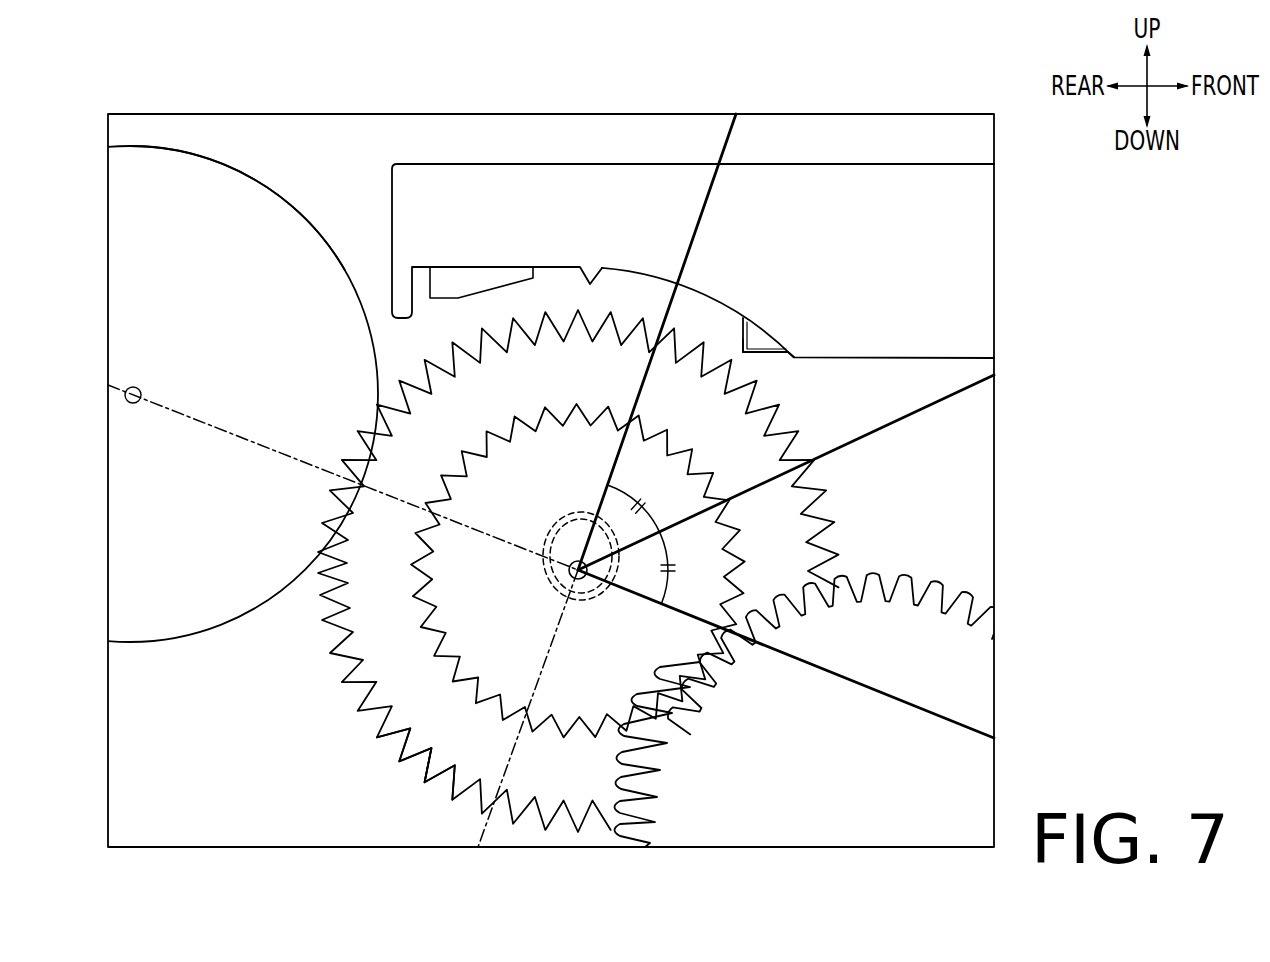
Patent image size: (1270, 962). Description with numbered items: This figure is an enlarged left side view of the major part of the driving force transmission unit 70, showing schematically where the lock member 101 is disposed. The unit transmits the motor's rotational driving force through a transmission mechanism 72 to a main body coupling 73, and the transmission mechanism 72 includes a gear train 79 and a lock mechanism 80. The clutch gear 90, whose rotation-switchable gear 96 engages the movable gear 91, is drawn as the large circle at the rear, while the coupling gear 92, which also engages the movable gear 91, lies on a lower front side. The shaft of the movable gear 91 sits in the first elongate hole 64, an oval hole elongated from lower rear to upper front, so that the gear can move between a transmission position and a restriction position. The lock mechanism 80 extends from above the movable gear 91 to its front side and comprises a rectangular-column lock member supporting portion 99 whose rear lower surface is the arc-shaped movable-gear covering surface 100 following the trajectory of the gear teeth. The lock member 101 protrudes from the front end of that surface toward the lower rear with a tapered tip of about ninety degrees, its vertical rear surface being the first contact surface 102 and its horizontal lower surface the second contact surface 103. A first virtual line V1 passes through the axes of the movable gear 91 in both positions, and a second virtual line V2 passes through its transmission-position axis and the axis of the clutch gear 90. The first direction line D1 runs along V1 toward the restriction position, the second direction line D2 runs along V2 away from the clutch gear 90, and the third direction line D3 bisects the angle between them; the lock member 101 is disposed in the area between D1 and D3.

The first elongate hole 64 is at (556, 580).
The driving force transmission unit 70 is at (325, 657).
The transmission mechanism 72 is at (370, 739).
The main body coupling 73 is at (909, 833).
The gear train 79 is at (385, 765).
The lock mechanism 80 is at (942, 158).
The clutch gear 90 is at (211, 160).
The movable gear 91 is at (437, 783).
The coupling gear 92 is at (943, 588).
The rotation-switchable gear 96 is at (280, 197).
The lock member supporting portion 99 is at (855, 164).
The movable-gear covering surface 100 is at (590, 284).
The lock member 101 is at (753, 360).
The first contact surface 102 is at (743, 330).
The second contact surface 103 is at (770, 353).
The first direction line D1 is at (711, 190).
The second direction line D2 is at (893, 697).
The third direction line D3 is at (930, 404).
The first virtual line V1 is at (510, 757).
The second virtual line V2 is at (222, 436).